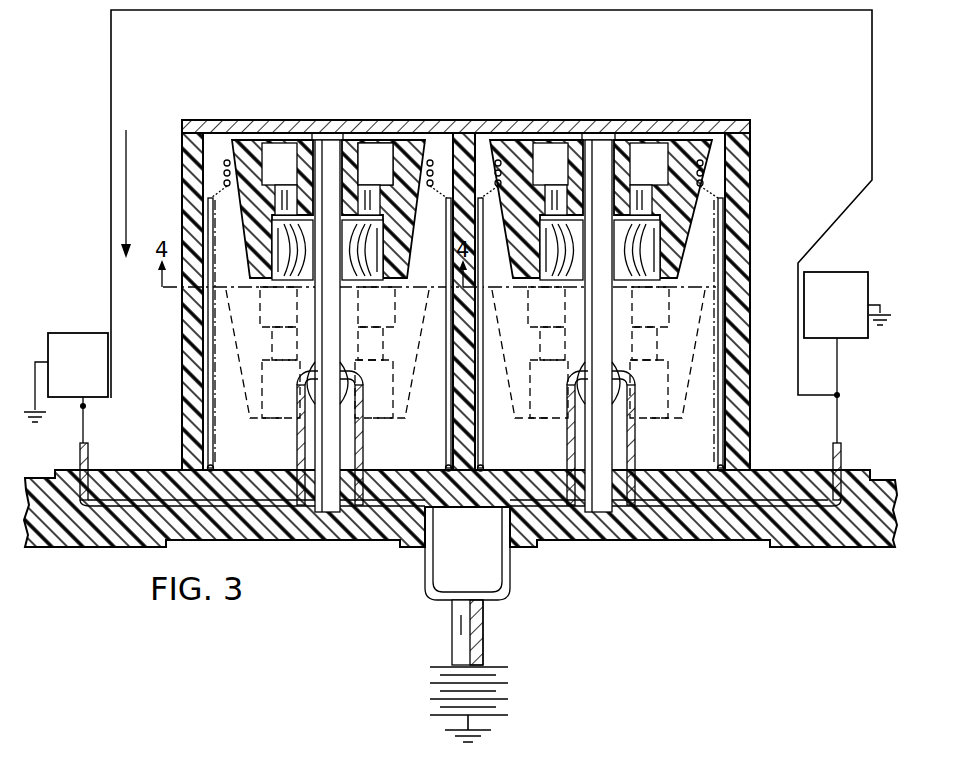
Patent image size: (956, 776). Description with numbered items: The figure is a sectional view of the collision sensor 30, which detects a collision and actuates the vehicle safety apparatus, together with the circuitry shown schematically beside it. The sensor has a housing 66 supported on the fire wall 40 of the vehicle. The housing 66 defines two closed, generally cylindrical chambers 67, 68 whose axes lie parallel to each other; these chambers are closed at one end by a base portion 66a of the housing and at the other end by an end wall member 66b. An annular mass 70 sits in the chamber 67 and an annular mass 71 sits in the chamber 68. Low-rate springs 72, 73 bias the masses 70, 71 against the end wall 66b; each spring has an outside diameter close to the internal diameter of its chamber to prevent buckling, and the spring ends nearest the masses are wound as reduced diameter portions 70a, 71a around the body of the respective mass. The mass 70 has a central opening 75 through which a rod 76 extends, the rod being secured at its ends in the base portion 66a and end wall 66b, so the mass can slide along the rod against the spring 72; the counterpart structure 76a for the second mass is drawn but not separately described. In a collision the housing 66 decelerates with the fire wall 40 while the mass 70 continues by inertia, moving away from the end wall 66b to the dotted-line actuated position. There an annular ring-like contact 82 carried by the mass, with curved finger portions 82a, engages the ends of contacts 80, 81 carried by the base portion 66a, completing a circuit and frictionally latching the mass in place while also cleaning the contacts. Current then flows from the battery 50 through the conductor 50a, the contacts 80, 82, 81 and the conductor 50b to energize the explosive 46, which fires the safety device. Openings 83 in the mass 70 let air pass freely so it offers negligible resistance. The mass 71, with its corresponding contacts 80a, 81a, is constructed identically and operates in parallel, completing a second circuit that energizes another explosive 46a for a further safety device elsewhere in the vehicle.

The collision sensor 30 is at (746, 68).
The fire wall 40 is at (888, 472).
The explosive 46 is at (80, 305).
The explosive 46a is at (822, 280).
The battery 50 is at (502, 682).
The conductor 50a is at (458, 632).
The conductor 50b is at (88, 438).
The housing 66 is at (740, 186).
The base portion 66a is at (276, 542).
The end wall member 66b is at (280, 121).
The chamber 67 is at (214, 318).
The chamber 68 is at (714, 286).
The annular mass 70 is at (245, 225).
The reduced diameter portion 70a is at (224, 172).
The annular mass 71 is at (686, 236).
The reduced diameter portion 71a is at (704, 166).
The spring 72 is at (213, 372).
The spring 73 is at (728, 362).
The central opening 75 is at (343, 148).
The rod 76 is at (334, 350).
The plunger collar 76a is at (608, 318).
The contact 80 is at (300, 404).
The contact post 80a is at (578, 402).
The contact 81 is at (366, 424).
The contact post 81a is at (640, 424).
The contact 82 is at (298, 300).
The curved finger portions 82a is at (395, 300).
The openings 83 is at (380, 196).